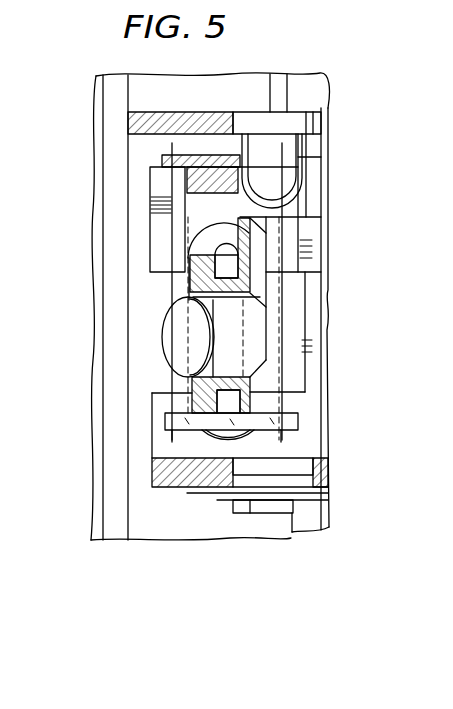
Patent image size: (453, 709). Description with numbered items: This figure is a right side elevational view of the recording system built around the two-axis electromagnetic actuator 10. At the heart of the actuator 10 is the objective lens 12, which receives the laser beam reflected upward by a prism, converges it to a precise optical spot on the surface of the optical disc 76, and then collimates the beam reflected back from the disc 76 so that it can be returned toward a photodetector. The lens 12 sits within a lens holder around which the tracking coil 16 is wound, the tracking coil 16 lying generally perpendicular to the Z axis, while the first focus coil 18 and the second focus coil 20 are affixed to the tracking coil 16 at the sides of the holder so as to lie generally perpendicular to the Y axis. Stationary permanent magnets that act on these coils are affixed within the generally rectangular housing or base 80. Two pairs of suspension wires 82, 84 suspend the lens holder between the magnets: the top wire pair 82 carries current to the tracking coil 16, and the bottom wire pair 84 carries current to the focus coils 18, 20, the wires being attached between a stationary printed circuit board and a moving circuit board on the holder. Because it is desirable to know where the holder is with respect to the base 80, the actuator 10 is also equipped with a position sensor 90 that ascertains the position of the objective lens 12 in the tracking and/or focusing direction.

The two-axis electromagnetic actuator 10 is at (125, 284).
The objective lens 12 is at (162, 337).
The tracking coil 16 is at (245, 398).
The first focus coil 18 is at (205, 240).
The second focus coil 20 is at (203, 441).
The optical disc 76 is at (118, 540).
The housing or base 80 is at (165, 421).
The first suspension wire pair 82 is at (165, 184).
The second suspension wire pair 84 is at (254, 214).
The position sensor 90 is at (253, 513).